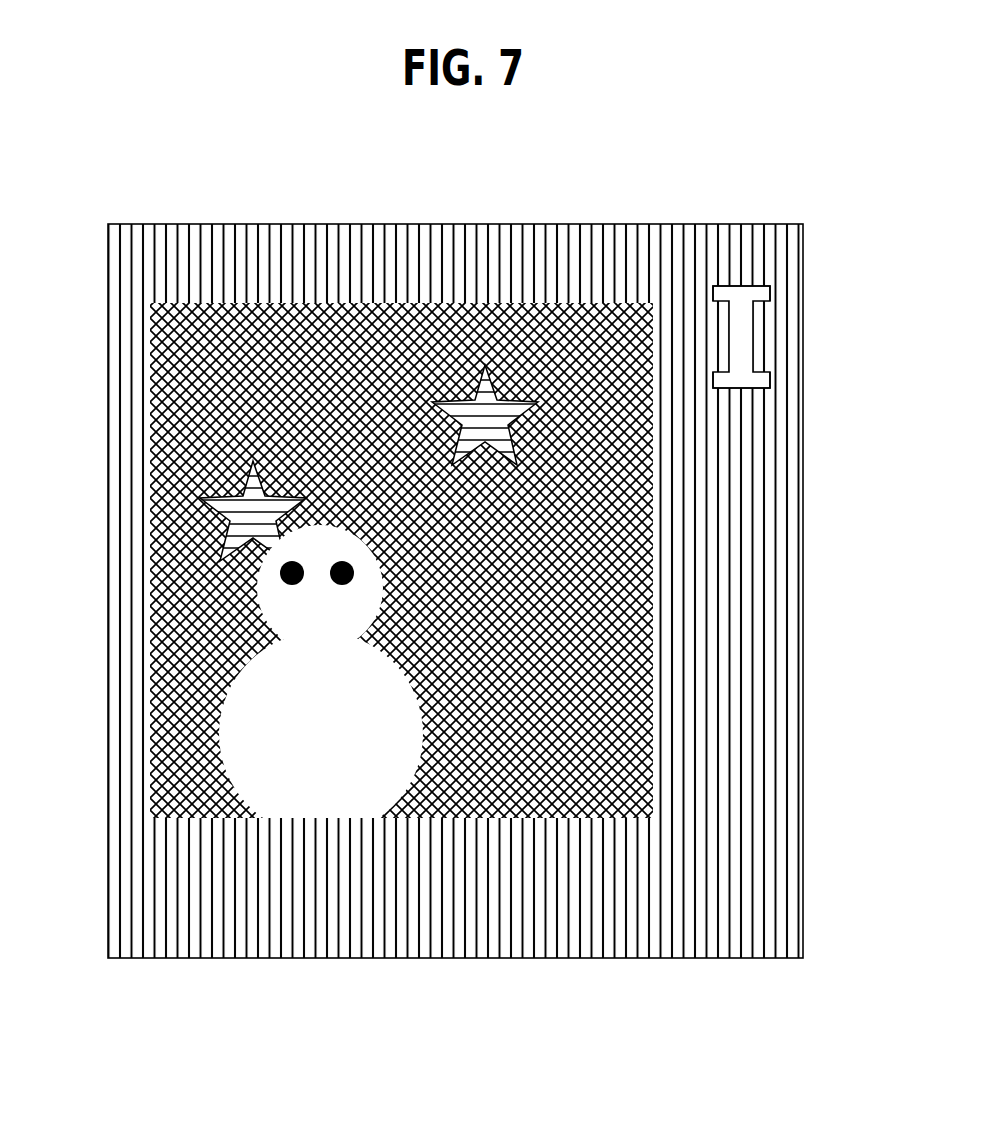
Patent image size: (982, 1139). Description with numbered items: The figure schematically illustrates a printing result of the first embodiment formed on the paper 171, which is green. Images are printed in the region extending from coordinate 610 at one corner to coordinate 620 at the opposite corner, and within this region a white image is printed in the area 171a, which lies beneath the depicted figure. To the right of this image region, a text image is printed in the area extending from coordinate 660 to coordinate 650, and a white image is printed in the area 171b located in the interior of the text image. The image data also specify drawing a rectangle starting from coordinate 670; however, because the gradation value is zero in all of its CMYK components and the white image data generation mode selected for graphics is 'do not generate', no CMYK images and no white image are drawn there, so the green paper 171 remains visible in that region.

The paper 171 is at (713, 224).
The area 171a is at (268, 750).
The area 171b is at (742, 345).
The coordinate 610 is at (150, 303).
The coordinate 620 is at (653, 816).
The coordinate 650 is at (770, 388).
The coordinate 660 is at (713, 286).
The coordinate 670 is at (733, 523).